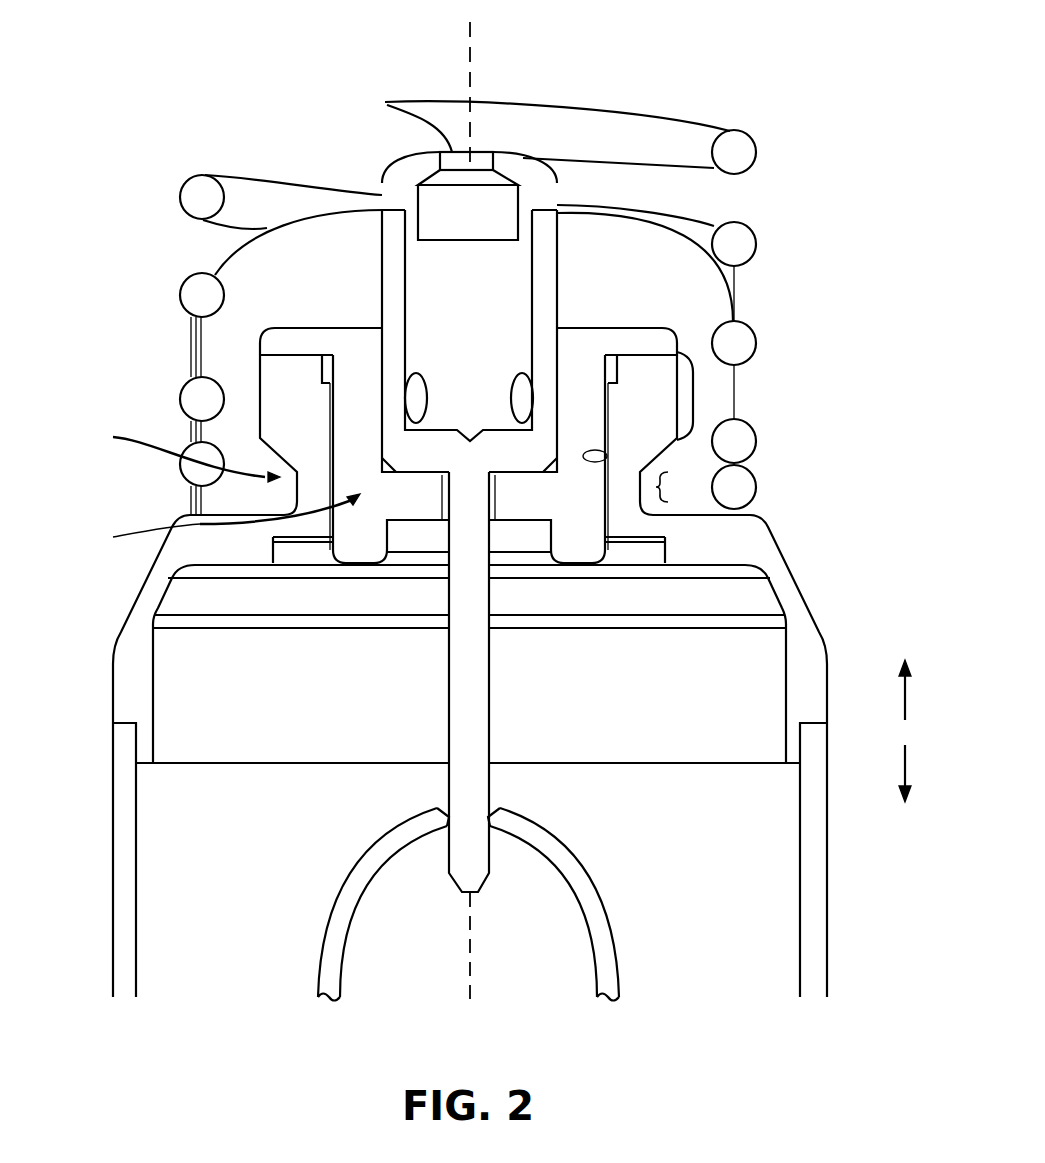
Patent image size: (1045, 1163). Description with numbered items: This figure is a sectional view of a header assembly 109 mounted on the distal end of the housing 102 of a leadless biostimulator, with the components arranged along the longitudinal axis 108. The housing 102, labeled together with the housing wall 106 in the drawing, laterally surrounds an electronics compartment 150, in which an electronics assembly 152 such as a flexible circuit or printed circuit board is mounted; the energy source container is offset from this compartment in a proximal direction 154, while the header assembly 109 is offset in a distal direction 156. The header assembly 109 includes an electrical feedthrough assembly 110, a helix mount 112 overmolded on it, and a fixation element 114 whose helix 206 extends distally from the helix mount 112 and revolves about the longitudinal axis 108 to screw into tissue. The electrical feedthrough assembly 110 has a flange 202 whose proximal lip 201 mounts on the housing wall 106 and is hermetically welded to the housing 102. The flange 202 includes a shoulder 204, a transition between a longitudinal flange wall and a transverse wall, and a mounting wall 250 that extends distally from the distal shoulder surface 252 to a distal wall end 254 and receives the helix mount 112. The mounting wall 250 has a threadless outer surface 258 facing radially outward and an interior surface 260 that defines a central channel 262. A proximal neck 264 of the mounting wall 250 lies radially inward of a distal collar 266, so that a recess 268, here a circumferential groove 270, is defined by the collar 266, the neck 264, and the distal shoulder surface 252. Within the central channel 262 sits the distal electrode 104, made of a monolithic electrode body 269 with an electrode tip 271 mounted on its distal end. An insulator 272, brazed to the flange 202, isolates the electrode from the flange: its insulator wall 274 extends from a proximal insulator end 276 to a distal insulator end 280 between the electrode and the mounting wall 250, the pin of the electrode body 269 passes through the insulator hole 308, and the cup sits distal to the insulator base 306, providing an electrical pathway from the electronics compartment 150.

The housing 102 is at (422, 734).
The distal electrode 104 is at (408, 170).
The container neck 106 is at (479, 698).
The longitudinal axis 108 is at (480, 40).
The header assembly 109 is at (187, 122).
The electrical feedthrough assembly 110 is at (469, 592).
The helix mount 112 is at (643, 232).
The fixation element 114 is at (557, 107).
The electronics compartment 150 is at (762, 840).
The electronics assembly 152 is at (587, 912).
The proximal direction 154 is at (905, 766).
The distal direction 156 is at (905, 700).
The proximal lip 201 is at (810, 727).
The flange 202 is at (469, 664).
The shoulder 204 is at (496, 747).
The helix 206 is at (610, 113).
The mounting wall 250 is at (458, 460).
The distal shoulder surface 252 is at (200, 505).
The distal wall end 254 is at (280, 357).
The outer surface 258 is at (476, 415).
The interior surface 260 is at (732, 441).
The central channel 262 is at (583, 453).
The neck 264 is at (668, 483).
The collar 266 is at (695, 398).
The recess 268 is at (155, 453).
The electrode body 269 is at (390, 312).
The circumferential groove 270 is at (196, 459).
The electrode tip 271 is at (717, 126).
The insulator 272 is at (216, 521).
The insulator wall 274 is at (367, 485).
The proximal insulator end 276 is at (360, 555).
The distal insulator end 280 is at (480, 339).
The insulator base 306 is at (474, 682).
The insulator hole 308 is at (442, 505).